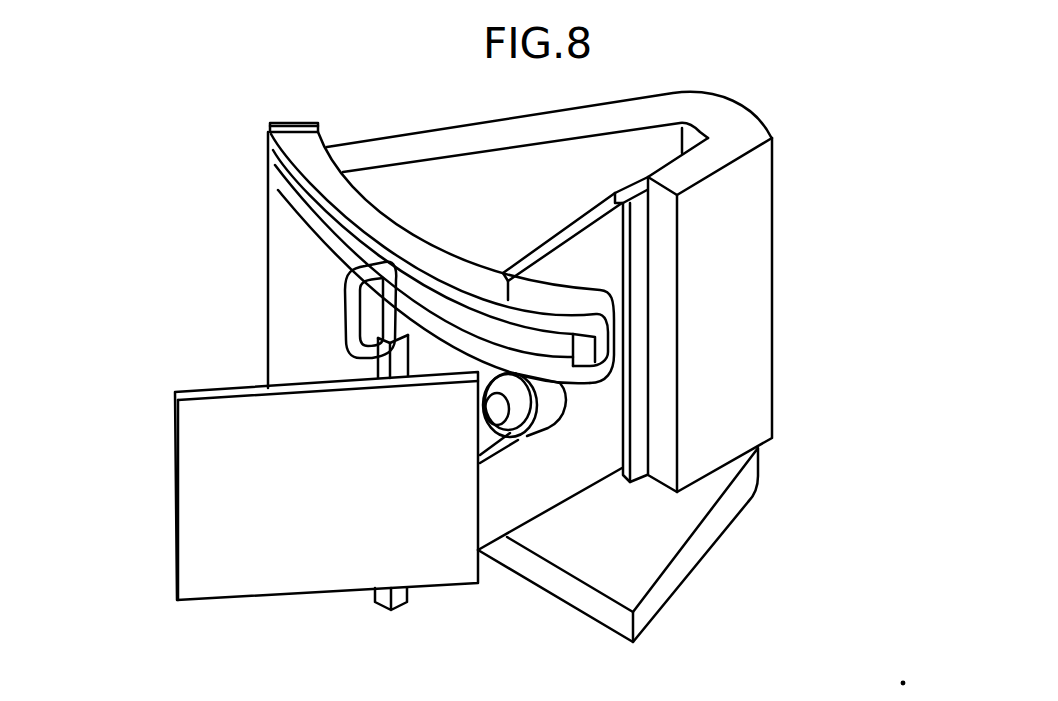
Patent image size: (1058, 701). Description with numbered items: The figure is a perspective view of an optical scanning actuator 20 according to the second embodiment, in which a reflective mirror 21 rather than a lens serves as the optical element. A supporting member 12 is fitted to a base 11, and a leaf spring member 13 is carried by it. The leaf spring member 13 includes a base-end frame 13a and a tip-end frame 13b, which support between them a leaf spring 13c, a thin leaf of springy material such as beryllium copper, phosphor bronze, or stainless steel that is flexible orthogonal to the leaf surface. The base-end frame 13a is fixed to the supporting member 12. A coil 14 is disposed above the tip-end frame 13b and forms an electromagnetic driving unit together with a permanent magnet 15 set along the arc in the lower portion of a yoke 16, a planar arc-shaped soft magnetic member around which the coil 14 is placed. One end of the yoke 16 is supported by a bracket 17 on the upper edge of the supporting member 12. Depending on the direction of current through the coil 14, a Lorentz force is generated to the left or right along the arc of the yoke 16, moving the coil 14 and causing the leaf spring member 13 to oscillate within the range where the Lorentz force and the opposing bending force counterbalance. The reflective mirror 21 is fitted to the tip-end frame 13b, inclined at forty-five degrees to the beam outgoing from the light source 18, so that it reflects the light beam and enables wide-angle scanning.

The base 11 is at (667, 528).
The supporting member 12 is at (430, 150).
The leaf spring member 13 is at (570, 230).
The base-end frame 13a is at (638, 295).
The tip-end frame 13b is at (380, 371).
The leaf spring 13c is at (577, 497).
The coil 14 is at (350, 325).
The permanent magnet 15 is at (348, 258).
The yoke 16 is at (340, 207).
The bracket 17 is at (293, 123).
The light source 18 is at (548, 405).
The actuator 20 is at (800, 125).
The reflective mirror 21 is at (205, 493).